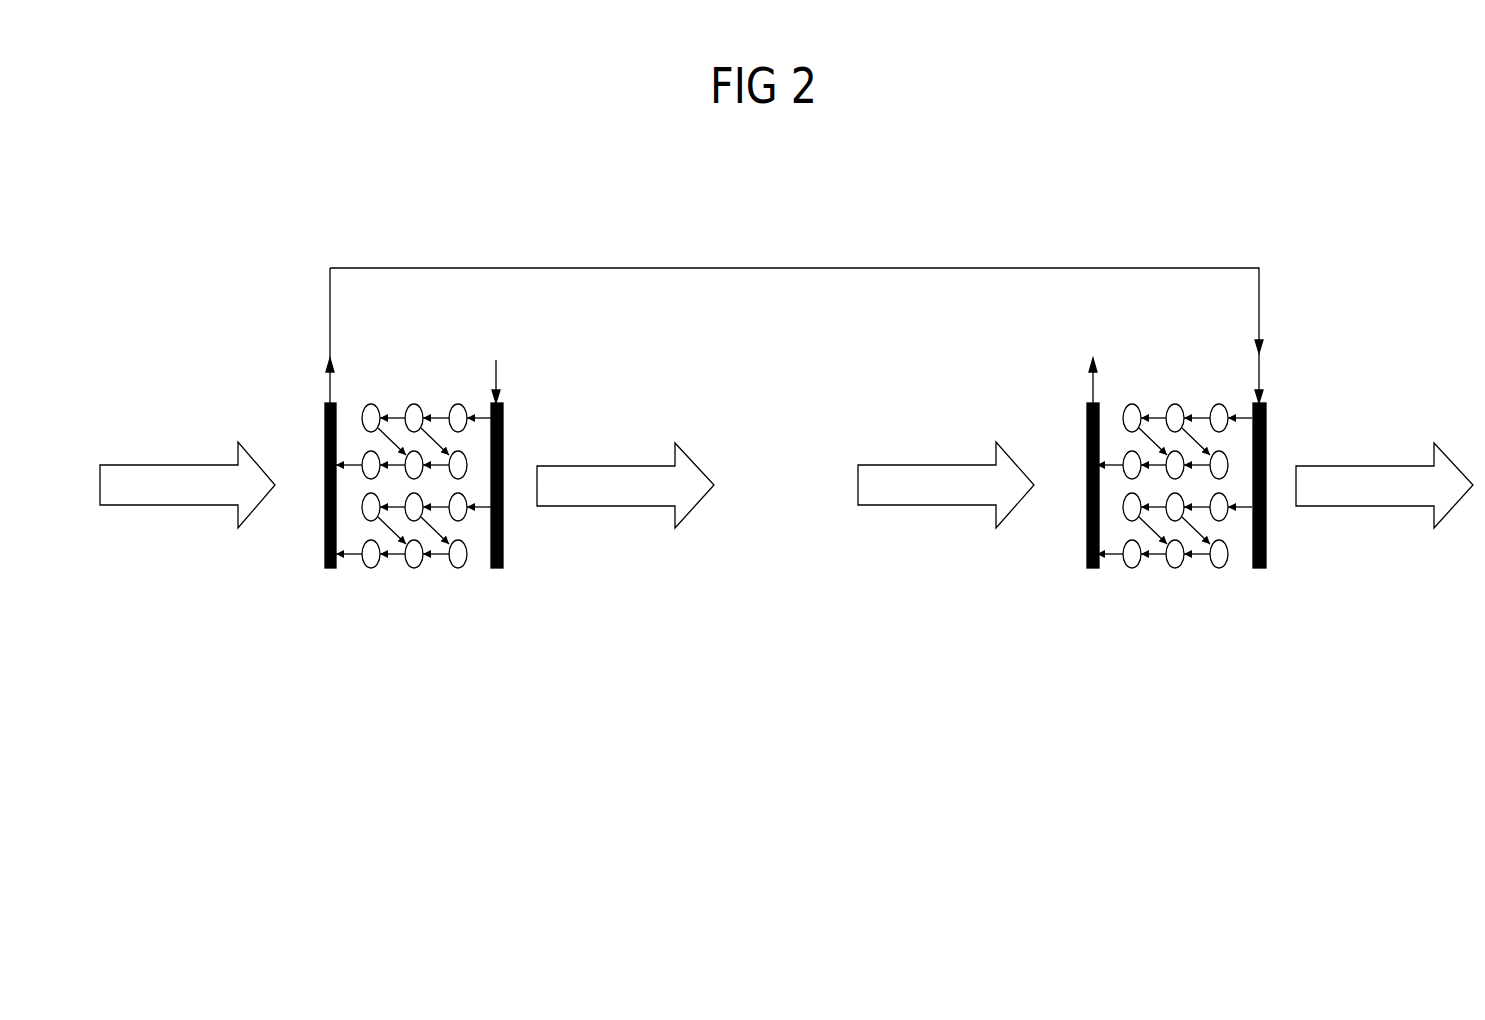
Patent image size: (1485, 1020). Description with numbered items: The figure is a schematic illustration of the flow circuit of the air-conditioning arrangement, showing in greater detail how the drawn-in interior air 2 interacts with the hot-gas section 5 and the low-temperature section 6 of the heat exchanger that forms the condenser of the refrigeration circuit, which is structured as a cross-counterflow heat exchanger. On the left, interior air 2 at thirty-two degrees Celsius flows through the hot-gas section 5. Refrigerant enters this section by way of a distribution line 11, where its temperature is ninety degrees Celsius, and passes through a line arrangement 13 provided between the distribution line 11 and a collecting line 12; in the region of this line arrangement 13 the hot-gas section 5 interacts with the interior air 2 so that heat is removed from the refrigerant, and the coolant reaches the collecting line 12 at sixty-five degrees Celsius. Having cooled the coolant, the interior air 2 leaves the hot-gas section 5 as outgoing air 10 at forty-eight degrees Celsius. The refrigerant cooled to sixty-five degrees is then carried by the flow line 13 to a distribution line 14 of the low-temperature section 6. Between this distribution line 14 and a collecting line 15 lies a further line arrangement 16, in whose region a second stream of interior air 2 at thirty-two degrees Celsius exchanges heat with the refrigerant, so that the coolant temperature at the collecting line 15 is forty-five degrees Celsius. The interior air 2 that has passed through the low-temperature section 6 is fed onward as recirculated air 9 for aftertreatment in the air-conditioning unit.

The interior air 2 is at (133, 465).
The hot-gas section 5 is at (393, 433).
The low-temperature section 6 is at (1191, 441).
The recirculated air 9 is at (1360, 466).
The outgoing air 10 is at (610, 466).
The distribution line 11 is at (505, 568).
The collecting line 12 is at (325, 566).
The line arrangement 13 is at (825, 268).
The distribution line 14 is at (1267, 568).
The collecting line 15 is at (1086, 568).
The line arrangement 16 is at (1182, 577).